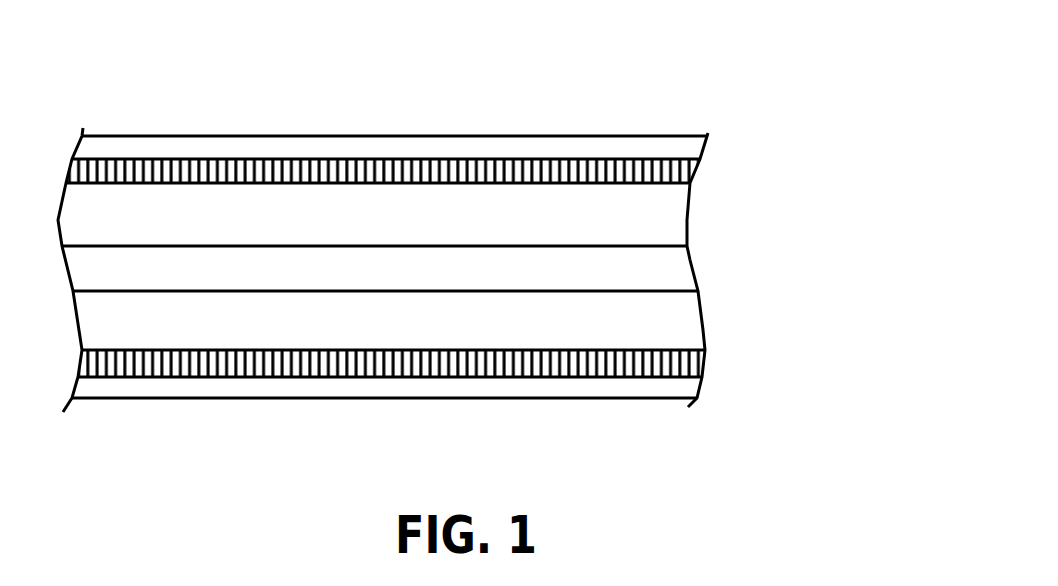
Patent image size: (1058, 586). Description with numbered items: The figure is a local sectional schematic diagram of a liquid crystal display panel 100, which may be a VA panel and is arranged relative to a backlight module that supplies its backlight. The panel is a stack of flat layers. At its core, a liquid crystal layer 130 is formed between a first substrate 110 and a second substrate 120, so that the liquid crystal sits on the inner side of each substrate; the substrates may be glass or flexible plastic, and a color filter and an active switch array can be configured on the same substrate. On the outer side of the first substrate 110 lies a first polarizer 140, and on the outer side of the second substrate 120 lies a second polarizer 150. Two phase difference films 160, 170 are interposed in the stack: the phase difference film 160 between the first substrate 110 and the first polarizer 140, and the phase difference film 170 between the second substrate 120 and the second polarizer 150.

The liquid crystal display panel 100 is at (778, 115).
The first substrate 110 is at (672, 222).
The second substrate 120 is at (687, 338).
The liquid crystal layer 130 is at (682, 275).
The first polarizer 140 is at (663, 147).
The second polarizer 150 is at (687, 387).
The phase difference film 160 is at (692, 163).
The phase difference film 170 is at (700, 363).